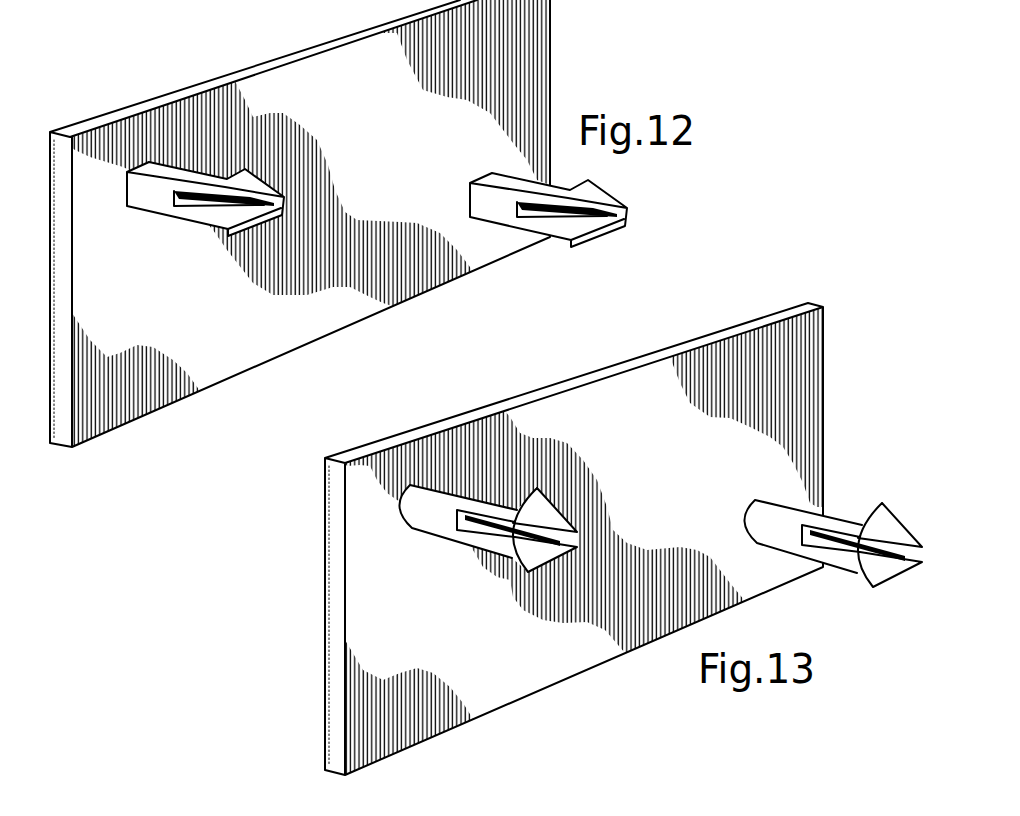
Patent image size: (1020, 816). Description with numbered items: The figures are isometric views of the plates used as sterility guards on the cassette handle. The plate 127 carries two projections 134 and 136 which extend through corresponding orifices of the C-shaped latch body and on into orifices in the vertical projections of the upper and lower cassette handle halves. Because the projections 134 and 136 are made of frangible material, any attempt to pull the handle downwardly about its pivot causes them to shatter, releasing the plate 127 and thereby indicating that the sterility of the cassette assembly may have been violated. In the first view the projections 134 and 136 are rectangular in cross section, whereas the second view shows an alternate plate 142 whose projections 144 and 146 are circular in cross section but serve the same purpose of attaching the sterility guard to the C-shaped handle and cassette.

In FIG. 12, the plate 127 is at (234, 326).
In FIG. 12, the projection 134 is at (157, 200).
In FIG. 12, the projection 136 is at (487, 199).
In FIG. 13, the panel with flow pattern 142 is at (512, 673).
In FIG. 13, the projection 144 is at (432, 517).
In FIG. 13, the projection 146 is at (778, 523).